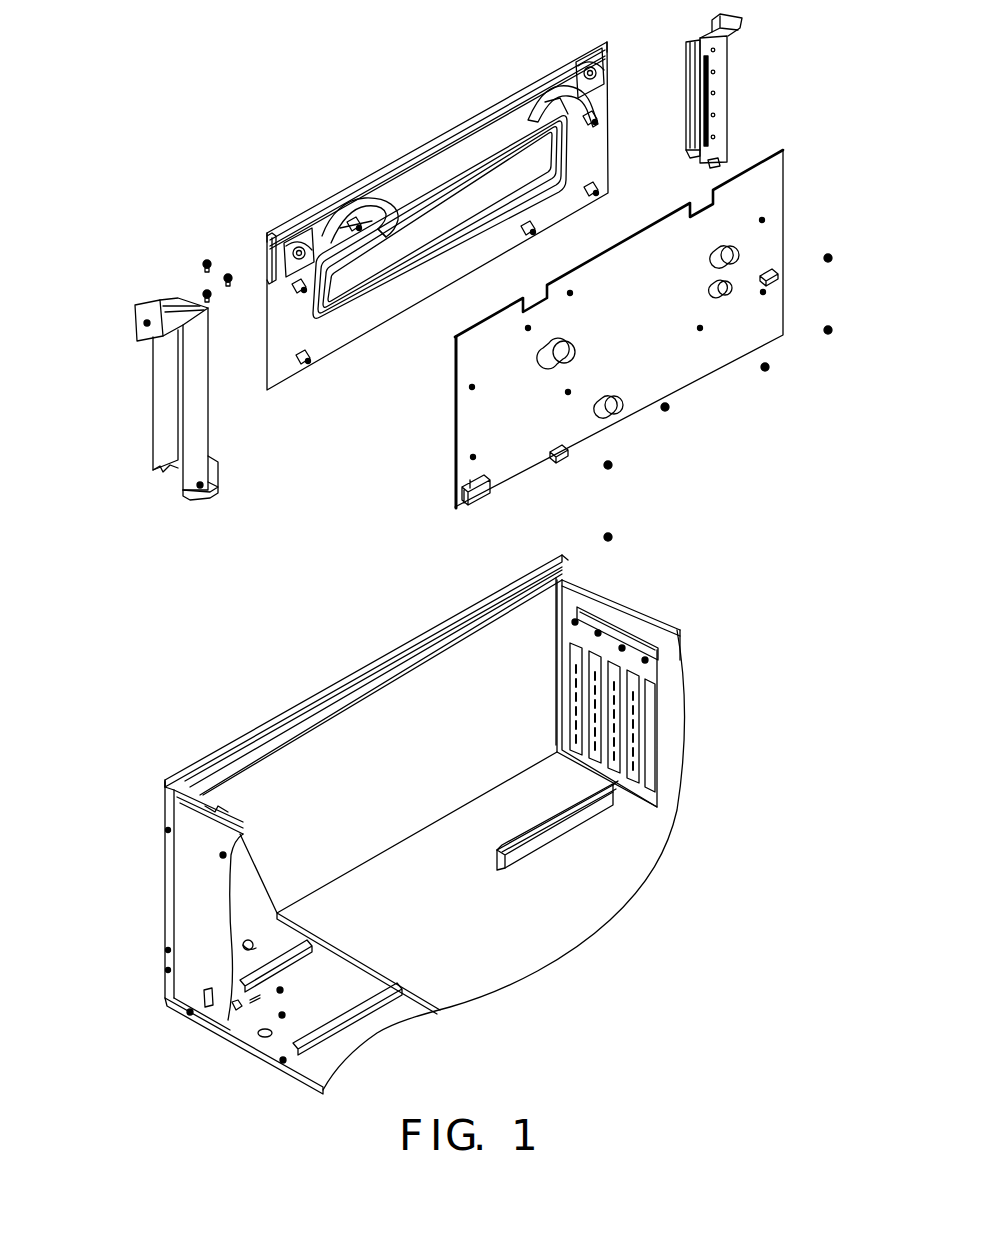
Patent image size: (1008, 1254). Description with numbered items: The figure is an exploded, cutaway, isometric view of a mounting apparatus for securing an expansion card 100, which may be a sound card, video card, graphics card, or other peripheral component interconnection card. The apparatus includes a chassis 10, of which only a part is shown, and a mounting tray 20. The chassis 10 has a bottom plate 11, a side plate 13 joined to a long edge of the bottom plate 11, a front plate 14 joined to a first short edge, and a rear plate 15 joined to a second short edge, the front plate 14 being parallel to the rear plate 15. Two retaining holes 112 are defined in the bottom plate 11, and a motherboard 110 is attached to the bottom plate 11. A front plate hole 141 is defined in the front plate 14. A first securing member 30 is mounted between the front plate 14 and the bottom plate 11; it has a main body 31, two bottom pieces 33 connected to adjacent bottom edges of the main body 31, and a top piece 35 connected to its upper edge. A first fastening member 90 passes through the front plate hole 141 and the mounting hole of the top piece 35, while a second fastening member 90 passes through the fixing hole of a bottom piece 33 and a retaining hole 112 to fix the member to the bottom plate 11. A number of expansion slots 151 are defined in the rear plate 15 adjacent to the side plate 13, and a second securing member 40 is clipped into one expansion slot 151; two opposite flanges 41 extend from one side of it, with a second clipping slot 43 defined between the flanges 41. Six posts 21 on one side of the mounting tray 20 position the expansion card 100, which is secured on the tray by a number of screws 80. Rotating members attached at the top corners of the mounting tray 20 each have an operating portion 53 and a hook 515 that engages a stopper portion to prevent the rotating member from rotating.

The chassis 10 is at (425, 833).
The bottom plate 11 is at (322, 1060).
The side plate 13 is at (330, 748).
The front plate 14 is at (192, 885).
The rear plate 15 is at (600, 600).
The mounting tray 20 is at (409, 216).
The posts 21 is at (298, 355).
The first securing member 30 is at (176, 389).
The main body 31 is at (200, 430).
The bottom pieces 33 is at (212, 482).
The top piece 35 is at (136, 318).
The second securing member 40 is at (724, 91).
The flanges 41 is at (694, 77).
The second clipping slot 43 is at (700, 53).
The operating portion 53 is at (548, 98).
The screws 80 is at (770, 369).
The fastening members 90 is at (204, 262).
The expansion card 100 is at (773, 186).
The motherboard 110 is at (630, 846).
The retaining holes 112 is at (277, 992).
The front plate hole 141 is at (220, 855).
The expansion slots 151 is at (645, 702).
The hook 515 is at (268, 310).